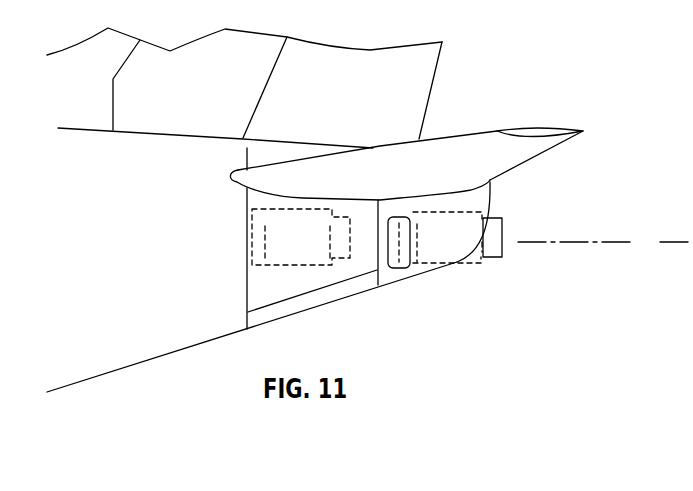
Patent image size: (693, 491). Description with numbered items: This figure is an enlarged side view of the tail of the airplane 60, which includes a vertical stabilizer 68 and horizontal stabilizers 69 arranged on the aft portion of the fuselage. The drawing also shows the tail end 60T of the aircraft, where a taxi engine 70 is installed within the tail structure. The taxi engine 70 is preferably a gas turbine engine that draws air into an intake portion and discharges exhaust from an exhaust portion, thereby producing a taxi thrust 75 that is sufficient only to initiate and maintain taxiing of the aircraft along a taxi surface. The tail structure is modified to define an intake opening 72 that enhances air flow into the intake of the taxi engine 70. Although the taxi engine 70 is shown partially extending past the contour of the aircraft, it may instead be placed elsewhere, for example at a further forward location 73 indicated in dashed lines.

The airplane 60 is at (252, 292).
The tail end of fuselage 60T is at (529, 285).
The vertical stabilizer 68 is at (285, 83).
The horizontal stabilizers 69 is at (406, 141).
The taxi engine 70 is at (504, 257).
The intake opening 72 is at (427, 284).
The further forward location 73 is at (308, 270).
The taxi thrust 75 is at (605, 243).